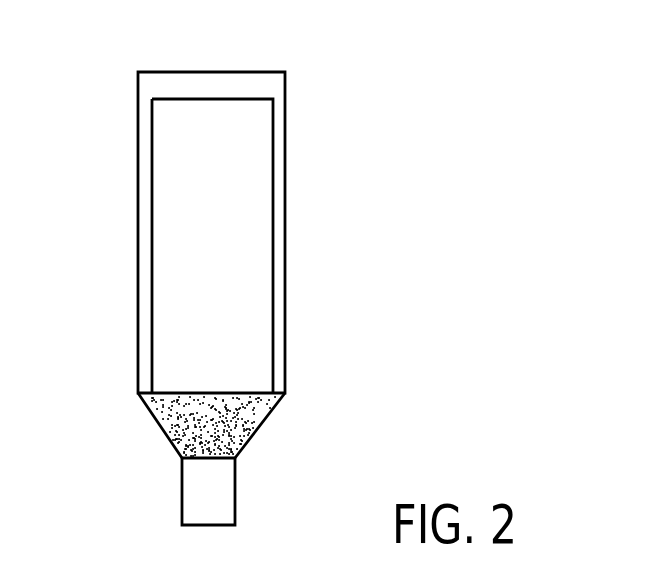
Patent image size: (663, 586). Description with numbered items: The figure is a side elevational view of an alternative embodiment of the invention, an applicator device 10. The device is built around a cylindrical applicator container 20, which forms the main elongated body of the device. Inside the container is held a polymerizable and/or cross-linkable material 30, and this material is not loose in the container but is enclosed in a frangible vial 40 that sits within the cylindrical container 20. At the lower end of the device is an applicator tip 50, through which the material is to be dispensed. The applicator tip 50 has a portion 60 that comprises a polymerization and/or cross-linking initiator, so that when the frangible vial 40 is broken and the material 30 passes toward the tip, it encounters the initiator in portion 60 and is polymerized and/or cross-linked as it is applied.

The applicator device 10 is at (347, 244).
The cylindrical applicator container 20 is at (138, 240).
The polymerizable and/or cross-linkable material 30 is at (253, 167).
The frangible vial 40 is at (225, 98).
The applicator tip 50 is at (237, 466).
The portion of applicator tip 60 is at (180, 431).